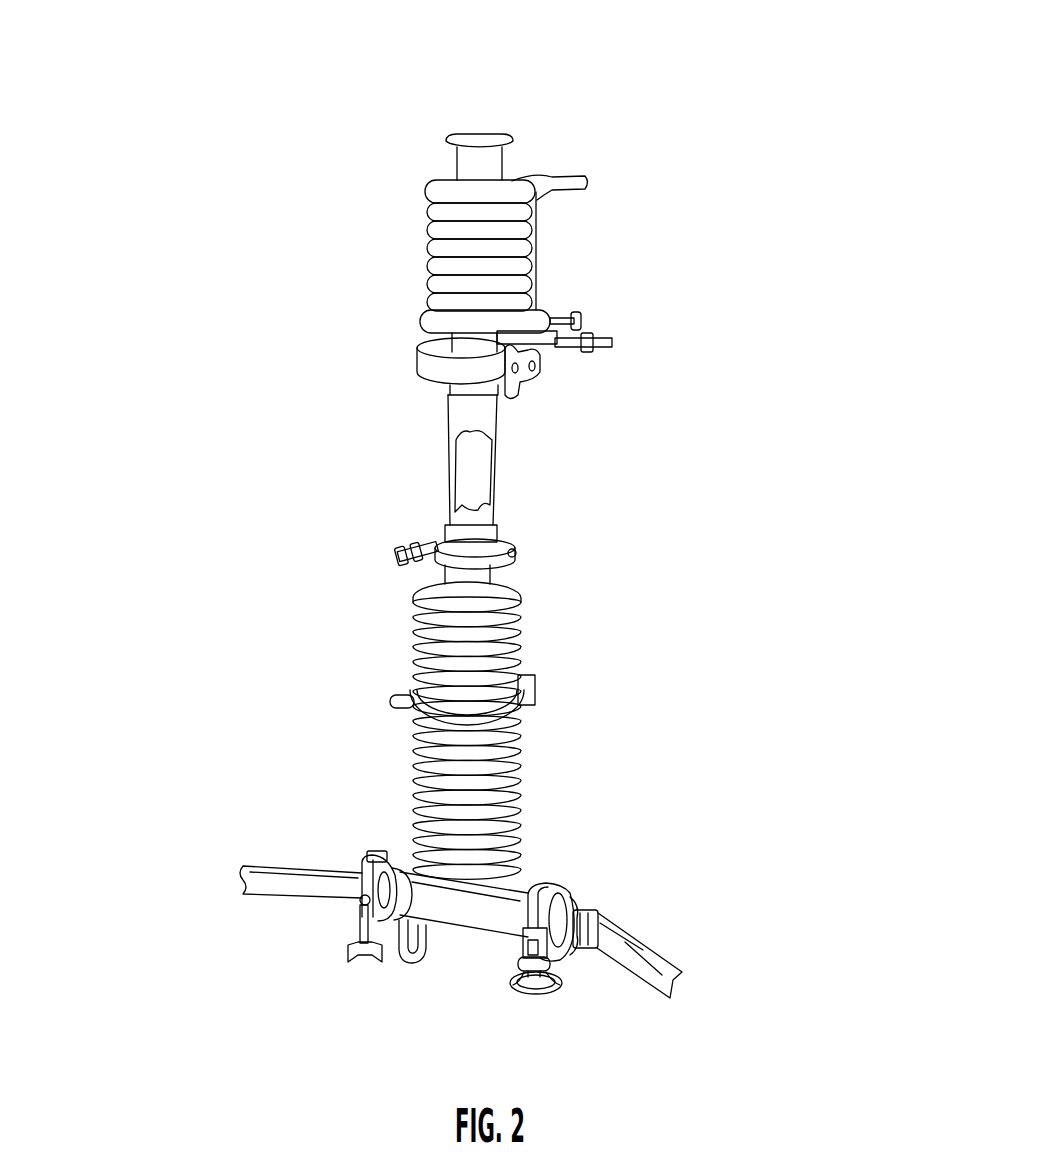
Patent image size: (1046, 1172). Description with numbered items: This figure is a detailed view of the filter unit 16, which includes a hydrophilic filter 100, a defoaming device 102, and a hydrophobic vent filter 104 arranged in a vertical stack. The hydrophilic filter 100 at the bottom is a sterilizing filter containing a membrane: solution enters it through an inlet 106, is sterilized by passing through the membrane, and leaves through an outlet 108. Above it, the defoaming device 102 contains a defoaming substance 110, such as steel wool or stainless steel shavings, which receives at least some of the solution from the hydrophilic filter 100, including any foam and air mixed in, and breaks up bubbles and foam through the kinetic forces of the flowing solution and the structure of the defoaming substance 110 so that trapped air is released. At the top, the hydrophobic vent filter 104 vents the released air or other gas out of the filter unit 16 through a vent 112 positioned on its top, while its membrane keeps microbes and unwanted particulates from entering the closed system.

The filter unit 16 is at (597, 92).
The hydrophilic filter 100 is at (588, 724).
The defoaming device 102 is at (596, 476).
The hydrophobic vent filter 104 is at (610, 286).
The inlet 106 is at (398, 900).
The outlet 108 is at (485, 915).
The defoaming substance 110 is at (470, 464).
The vent 112 is at (473, 133).